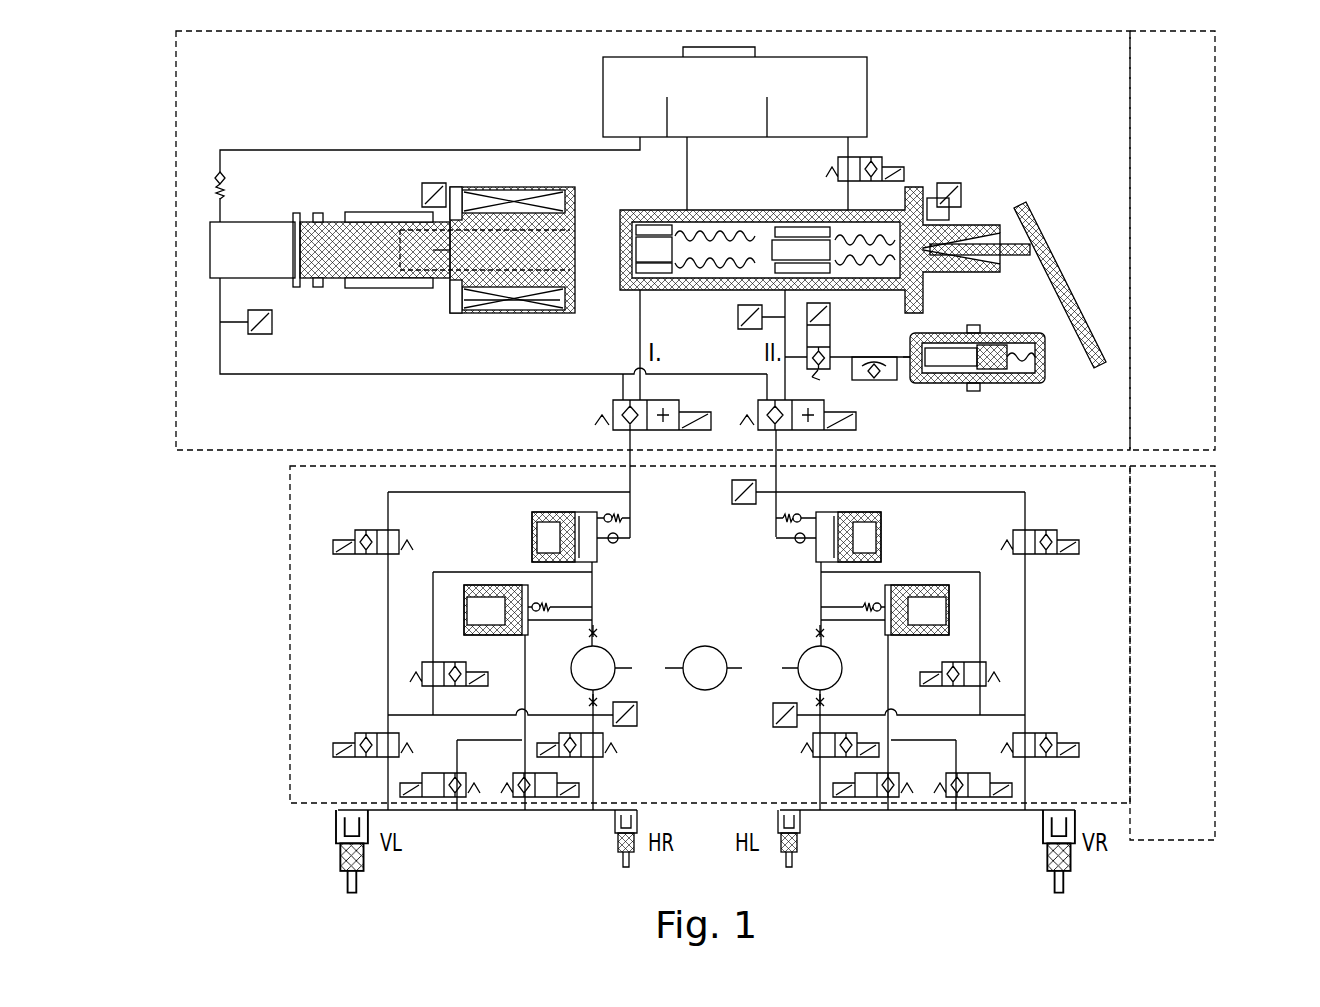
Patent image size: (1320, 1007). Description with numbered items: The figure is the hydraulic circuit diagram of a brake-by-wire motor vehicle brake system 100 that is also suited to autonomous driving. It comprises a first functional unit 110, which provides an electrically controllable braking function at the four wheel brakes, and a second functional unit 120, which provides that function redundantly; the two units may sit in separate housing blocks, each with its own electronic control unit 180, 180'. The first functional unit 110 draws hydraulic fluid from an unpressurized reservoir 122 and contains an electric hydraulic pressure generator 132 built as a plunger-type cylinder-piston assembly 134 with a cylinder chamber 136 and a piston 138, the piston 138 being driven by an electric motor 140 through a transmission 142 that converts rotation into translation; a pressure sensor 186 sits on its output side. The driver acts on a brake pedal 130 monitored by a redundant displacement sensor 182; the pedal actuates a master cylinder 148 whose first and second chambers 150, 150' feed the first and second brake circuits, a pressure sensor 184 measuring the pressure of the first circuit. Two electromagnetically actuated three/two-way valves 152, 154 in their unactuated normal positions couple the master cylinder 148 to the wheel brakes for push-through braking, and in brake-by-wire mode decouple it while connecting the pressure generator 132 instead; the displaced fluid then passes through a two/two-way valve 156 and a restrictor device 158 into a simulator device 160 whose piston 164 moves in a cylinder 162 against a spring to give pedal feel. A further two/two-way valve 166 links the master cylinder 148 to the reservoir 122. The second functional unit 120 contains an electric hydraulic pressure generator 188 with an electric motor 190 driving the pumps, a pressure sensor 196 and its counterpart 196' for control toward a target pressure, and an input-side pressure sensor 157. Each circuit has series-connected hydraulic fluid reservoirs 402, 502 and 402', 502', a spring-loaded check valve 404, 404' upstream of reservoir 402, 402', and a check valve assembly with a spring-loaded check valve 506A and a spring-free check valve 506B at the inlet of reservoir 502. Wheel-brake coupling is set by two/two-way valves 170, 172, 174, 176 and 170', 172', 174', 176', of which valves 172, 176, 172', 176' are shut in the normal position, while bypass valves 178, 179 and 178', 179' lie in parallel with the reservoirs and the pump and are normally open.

The hydraulic motor vehicle brake system 100 is at (205, 528).
The first functional unit 110 is at (176, 310).
The second functional unit 120 is at (290, 502).
The reservoir 122 is at (850, 76).
The brake pedal 130 is at (1038, 218).
The electric hydraulic pressure generator 132 is at (514, 172).
The cylinder-piston assembly 134 is at (352, 186).
The cylinder chamber 136 is at (270, 236).
The piston 138 is at (330, 288).
The electric motor 140 is at (505, 308).
The transmission 142 is at (437, 290).
The master cylinder 148 is at (972, 148).
The first chamber 150 is at (689, 221).
The second chamber 150' is at (830, 221).
The 3/2-way valve 152 is at (608, 402).
The 3/2-way valve 154 is at (880, 380).
The 2/2-way valve 156 is at (832, 332).
The pressure sensor 157 is at (731, 494).
The restrictor device 158 is at (910, 334).
The simulator device 160 is at (1026, 316).
The cylinder 162 is at (915, 384).
The piston 164 is at (975, 385).
The 2/2-way valve 166 is at (862, 158).
The 2/2-way valve 170 is at (373, 715).
The 2/2-way valve 170' is at (819, 760).
The 2/2-way valve 172 is at (444, 816).
The 2/2-way valve 172' is at (873, 816).
The 2/2-way valve 174 is at (593, 760).
The 2/2-way valve 174' is at (1040, 715).
The 2/2-way valve 176 is at (536, 816).
The 2/2-way valve 176' is at (973, 816).
The bypass valve 178 is at (465, 664).
The bypass valve 178' is at (951, 687).
The bypass valve 179 is at (373, 574).
The bypass valve 179' is at (1040, 514).
The control unit 180 is at (1209, 240).
The control unit 180' is at (1214, 653).
The displacement sensor 182 is at (962, 196).
The pressure sensor 184 is at (737, 317).
The pressure sensor 186 is at (268, 336).
The electric hydraulic pressure generator 188 is at (726, 626).
The electric motor 190 is at (708, 690).
The pressure sensor 196 is at (643, 729).
The pressure sensor 196' is at (760, 703).
The hydraulic fluid reservoir 402 is at (483, 582).
The hydraulic fluid reservoir 402' is at (917, 585).
The check valve 404 is at (561, 599).
The check valve 404' is at (849, 595).
The hydraulic fluid reservoir 502 is at (540, 536).
The hydraulic fluid reservoir 502' is at (875, 528).
The check valve 506A is at (625, 516).
The check valve 506B is at (614, 544).